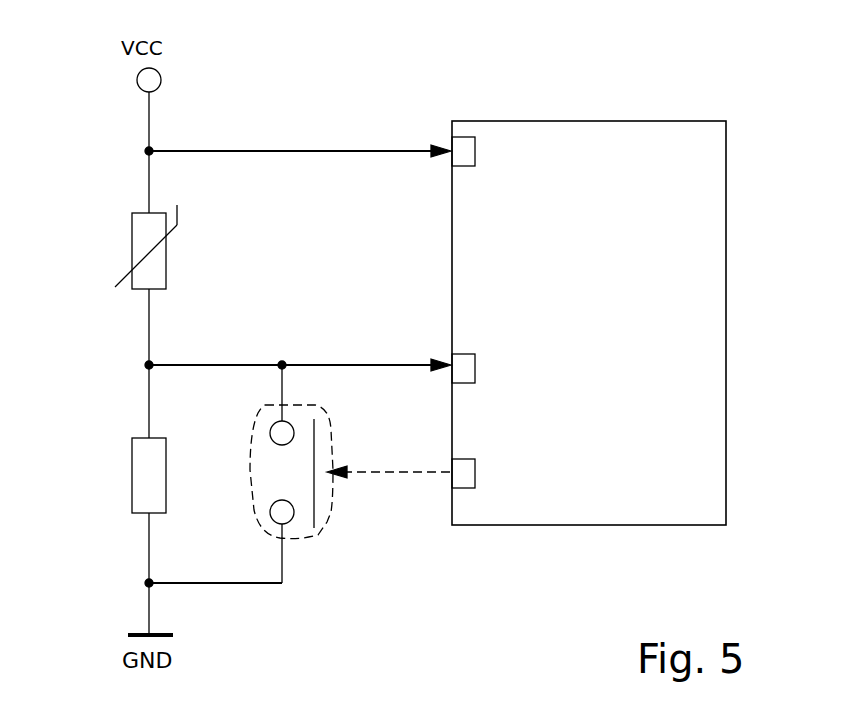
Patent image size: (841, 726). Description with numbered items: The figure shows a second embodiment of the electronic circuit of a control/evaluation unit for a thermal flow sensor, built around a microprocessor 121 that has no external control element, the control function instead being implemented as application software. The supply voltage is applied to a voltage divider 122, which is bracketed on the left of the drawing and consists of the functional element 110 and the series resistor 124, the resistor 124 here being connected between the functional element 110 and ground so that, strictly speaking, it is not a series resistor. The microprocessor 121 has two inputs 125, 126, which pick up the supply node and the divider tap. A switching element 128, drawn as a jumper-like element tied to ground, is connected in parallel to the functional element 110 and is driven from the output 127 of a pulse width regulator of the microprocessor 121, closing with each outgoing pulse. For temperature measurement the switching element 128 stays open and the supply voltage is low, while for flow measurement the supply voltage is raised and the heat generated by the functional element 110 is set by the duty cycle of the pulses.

The functional element 110 is at (157, 263).
The microprocessor 121 is at (618, 338).
The voltage divider 122 is at (98, 206).
The series resistor 124 is at (148, 475).
The input 125 is at (462, 365).
The input 126 is at (464, 152).
The output 127 is at (464, 478).
The switching element 128 is at (331, 515).